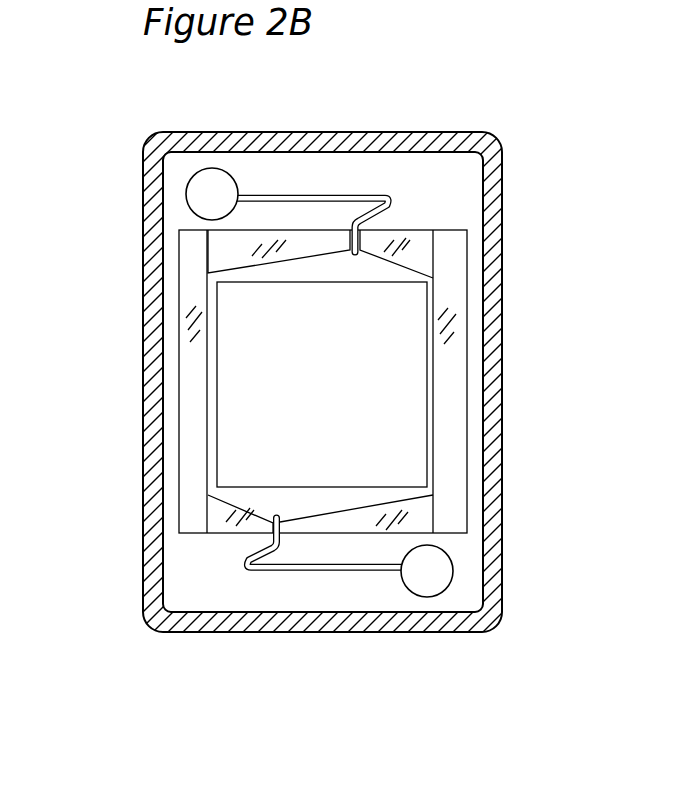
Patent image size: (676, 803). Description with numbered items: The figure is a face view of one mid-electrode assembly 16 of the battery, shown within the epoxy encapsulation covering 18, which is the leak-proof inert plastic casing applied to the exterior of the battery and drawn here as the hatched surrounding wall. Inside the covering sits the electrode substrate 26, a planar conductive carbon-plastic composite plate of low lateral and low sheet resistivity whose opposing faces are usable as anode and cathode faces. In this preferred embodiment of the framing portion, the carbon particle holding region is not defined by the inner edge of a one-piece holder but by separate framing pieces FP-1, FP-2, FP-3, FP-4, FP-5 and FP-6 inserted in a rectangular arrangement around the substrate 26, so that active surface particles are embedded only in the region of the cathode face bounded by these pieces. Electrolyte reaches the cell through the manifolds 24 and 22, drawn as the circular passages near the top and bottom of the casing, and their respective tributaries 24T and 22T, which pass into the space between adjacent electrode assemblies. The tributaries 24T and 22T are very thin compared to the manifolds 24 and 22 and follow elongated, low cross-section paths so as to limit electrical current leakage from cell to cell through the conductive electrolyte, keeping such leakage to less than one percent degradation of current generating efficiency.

The mid-electrode assembly 16 is at (447, 193).
The epoxy encapsulation covering 18 is at (388, 131).
The manifold 24 is at (214, 167).
The tributary 24T is at (312, 193).
The manifold 22 is at (427, 597).
The tributary 22T is at (330, 571).
The electrode substrate 26 is at (331, 381).
The framing piece FP-1 is at (230, 260).
The framing piece FP-2 is at (420, 253).
The framing piece FP-3 is at (448, 372).
The framing piece FP-4 is at (420, 517).
The framing piece FP-5 is at (218, 512).
The framing piece FP-6 is at (193, 365).